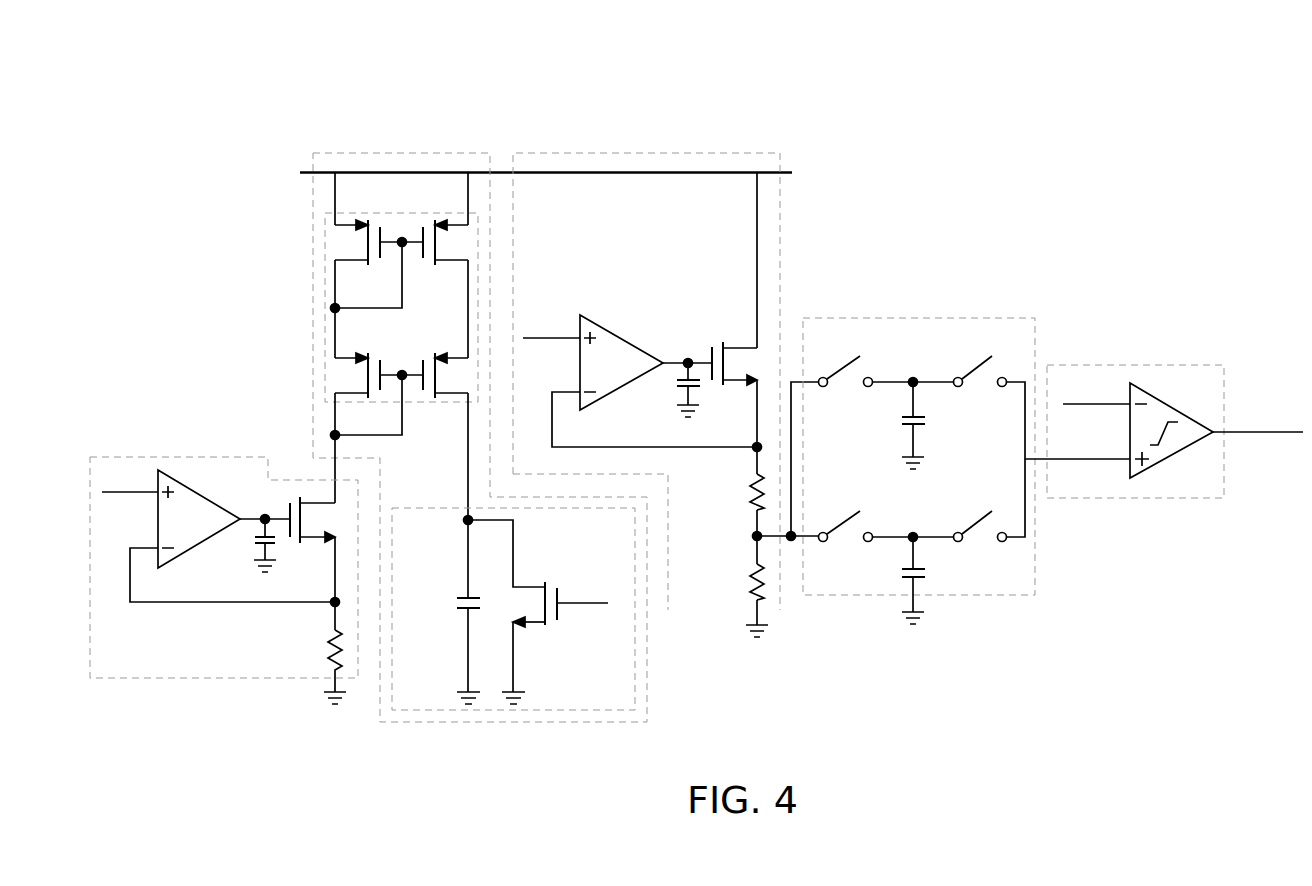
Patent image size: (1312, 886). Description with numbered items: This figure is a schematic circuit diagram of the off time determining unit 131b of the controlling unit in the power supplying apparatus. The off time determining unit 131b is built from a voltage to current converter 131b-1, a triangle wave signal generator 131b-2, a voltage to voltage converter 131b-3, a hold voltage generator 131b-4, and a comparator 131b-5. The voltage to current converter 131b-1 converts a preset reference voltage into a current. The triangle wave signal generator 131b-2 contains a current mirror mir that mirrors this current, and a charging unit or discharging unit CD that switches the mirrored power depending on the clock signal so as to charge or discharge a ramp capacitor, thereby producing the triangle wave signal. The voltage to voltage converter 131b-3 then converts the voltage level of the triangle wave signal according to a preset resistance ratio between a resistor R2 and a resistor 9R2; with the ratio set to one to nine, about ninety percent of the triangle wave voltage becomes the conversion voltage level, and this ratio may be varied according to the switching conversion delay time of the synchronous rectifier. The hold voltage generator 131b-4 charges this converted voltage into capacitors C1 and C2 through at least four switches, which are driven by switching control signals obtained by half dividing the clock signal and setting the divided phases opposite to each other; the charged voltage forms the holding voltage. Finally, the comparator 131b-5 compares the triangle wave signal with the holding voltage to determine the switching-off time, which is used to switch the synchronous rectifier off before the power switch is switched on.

The off time determining unit 131b is at (663, 56).
The voltage to current converter 131b-1 is at (178, 456).
The triangle wave signal generator 131b-2 is at (401, 152).
The voltage to voltage converter 131b-3 is at (646, 152).
The hold voltage generator 131b-4 is at (917, 318).
The comparator 131b-5 is at (1134, 364).
The current mirror mir is at (325, 296).
The charging unit or discharging unit CD is at (433, 507).
The resistor R2 is at (740, 492).
The resistor 9R2 is at (733, 582).
The capacitor C1 is at (900, 425).
The capacitor C2 is at (900, 580).